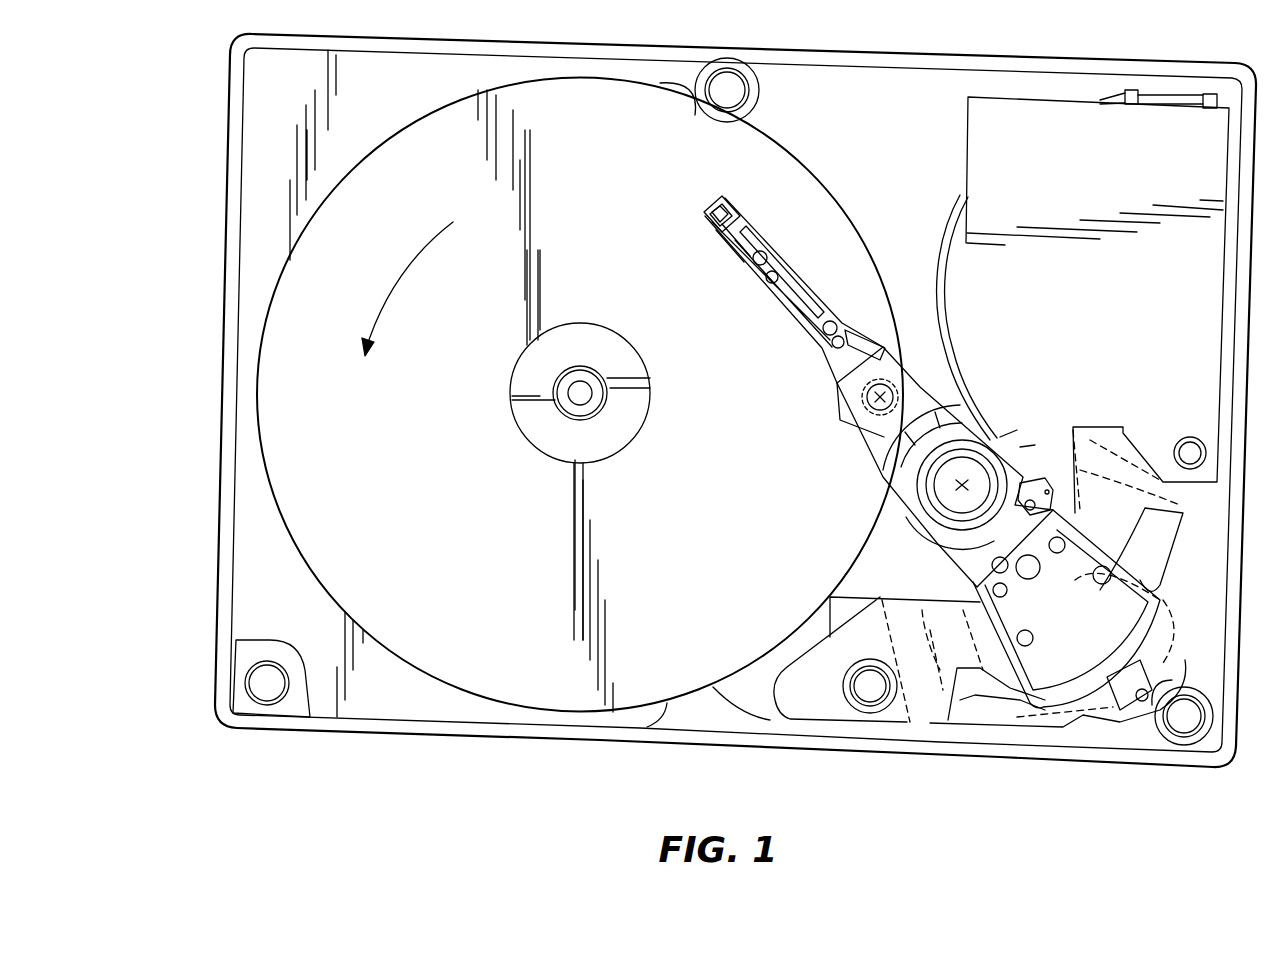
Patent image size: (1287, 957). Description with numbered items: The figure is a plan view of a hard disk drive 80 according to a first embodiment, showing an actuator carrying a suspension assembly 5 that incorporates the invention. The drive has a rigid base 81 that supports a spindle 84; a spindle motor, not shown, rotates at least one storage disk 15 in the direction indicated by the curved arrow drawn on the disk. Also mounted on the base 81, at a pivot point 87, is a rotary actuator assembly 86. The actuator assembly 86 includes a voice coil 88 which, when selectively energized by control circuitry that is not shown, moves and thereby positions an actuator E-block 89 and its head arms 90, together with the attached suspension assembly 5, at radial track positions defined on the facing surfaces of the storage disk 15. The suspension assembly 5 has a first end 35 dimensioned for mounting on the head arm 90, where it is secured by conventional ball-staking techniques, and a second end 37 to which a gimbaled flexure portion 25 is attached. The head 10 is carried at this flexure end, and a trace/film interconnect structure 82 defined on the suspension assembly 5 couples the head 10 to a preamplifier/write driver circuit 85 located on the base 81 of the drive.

The hard disk drive 80 is at (718, 440).
The rigid base 81 is at (258, 790).
The storage disk 15 is at (607, 117).
The spindle 84 is at (587, 354).
The suspension assembly 5 is at (805, 285).
The trace/film interconnect structure 82 is at (778, 262).
The second end 37 is at (717, 243).
The head 10 is at (725, 205).
The gimbaled flexure portion 25 is at (702, 220).
The pivot point 87 is at (960, 487).
The first end 35 is at (868, 398).
The head arm 90 is at (838, 430).
The voice coil 88 is at (1165, 595).
The actuator E-block 89 is at (950, 375).
The preamplifier/write driver circuit 85 is at (1010, 437).
The rotary actuator assembly 86 is at (1027, 446).